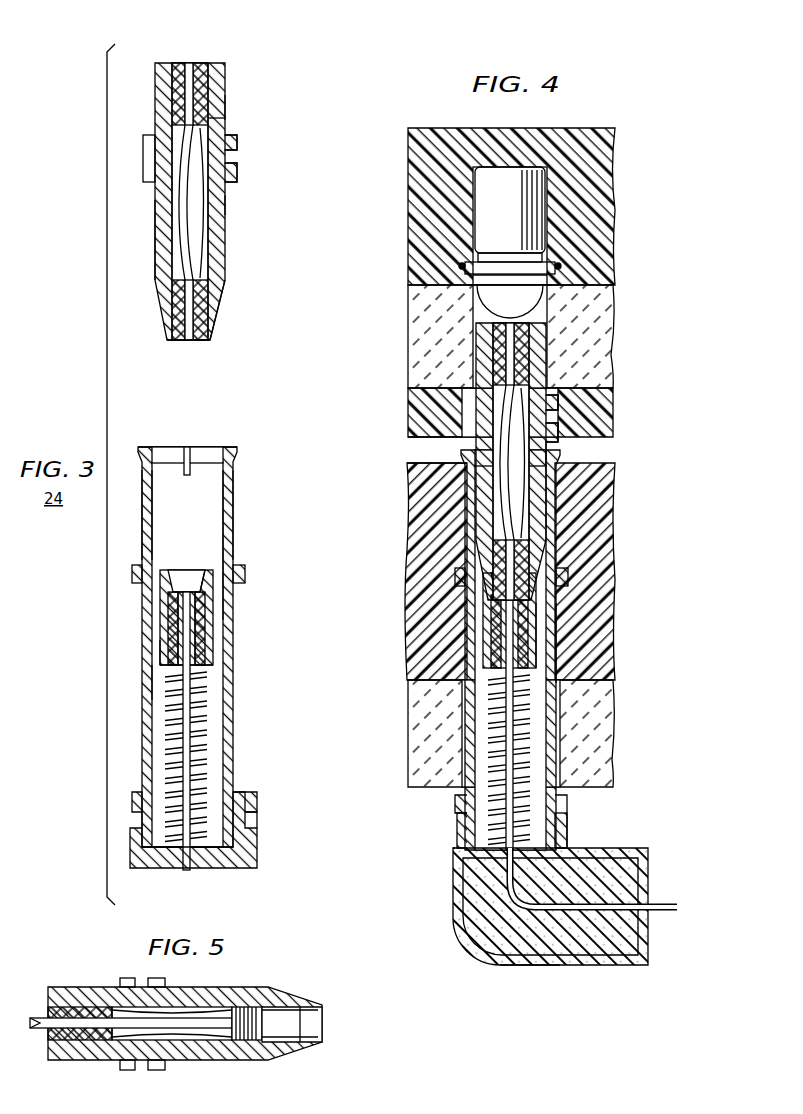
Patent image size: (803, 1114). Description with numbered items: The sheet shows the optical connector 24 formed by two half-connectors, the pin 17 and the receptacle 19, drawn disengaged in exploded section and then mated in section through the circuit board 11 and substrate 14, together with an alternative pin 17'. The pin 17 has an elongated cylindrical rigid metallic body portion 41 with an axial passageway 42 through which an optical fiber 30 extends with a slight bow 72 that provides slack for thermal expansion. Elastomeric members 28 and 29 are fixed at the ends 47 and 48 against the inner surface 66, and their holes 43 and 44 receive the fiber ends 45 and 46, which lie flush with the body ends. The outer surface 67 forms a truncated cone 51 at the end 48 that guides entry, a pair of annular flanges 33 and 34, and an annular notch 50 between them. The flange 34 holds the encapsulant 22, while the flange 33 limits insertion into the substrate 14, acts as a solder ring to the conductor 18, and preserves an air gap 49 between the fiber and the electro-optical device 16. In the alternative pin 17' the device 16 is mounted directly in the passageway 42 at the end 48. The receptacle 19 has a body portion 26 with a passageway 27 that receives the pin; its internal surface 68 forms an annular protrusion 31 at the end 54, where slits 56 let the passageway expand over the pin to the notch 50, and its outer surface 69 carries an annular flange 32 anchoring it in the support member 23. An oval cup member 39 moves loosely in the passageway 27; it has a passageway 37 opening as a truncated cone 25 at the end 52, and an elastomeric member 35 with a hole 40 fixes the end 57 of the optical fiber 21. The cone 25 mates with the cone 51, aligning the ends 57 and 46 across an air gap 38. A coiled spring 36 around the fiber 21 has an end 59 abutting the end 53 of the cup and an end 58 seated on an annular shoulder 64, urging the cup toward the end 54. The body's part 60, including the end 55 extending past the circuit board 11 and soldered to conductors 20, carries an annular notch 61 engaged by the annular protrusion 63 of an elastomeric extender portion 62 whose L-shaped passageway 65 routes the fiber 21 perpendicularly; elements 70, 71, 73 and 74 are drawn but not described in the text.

In FIG. 4, the circuit board 11 is at (606, 740).
In FIG. 4, the substrate 14 is at (612, 336).
In FIG. 4, the electro-optical device 16 is at (472, 178).
In FIG. 5, the electro-optical device 16 is at (306, 1012).
In FIG. 3, the pin 17 is at (179, 189).
In FIG. 4, the pin 17 is at (464, 461).
In FIG. 5, the pin (alternative embodiment) 17' is at (176, 1004).
In FIG. 4, the conductor 18 is at (572, 378).
In FIG. 3, the receptacle 19 is at (140, 470).
In FIG. 4, the receptacle 19 is at (465, 650).
In FIG. 4, the electrical conductors 20 is at (572, 797).
In FIG. 3, the optical fiber 21 is at (190, 704).
In FIG. 4, the optical fiber 21 is at (472, 722).
In FIG. 4, the encapsulant 22 is at (612, 210).
In FIG. 4, the support member 23 is at (612, 500).
In FIG. 4, the connector 24 is at (455, 448).
In FIG. 3, the truncated cone 25 is at (214, 570).
In FIG. 3, the body portion 26 is at (228, 524).
In FIG. 4, the body portion 26 is at (603, 643).
In FIG. 3, the passageway 27 is at (210, 497).
In FIG. 3, the elastomeric member 28 is at (205, 84).
In FIG. 4, the elastomeric member 28 is at (484, 461).
In FIG. 3, the elastomeric member 29 is at (208, 322).
In FIG. 4, the elastomeric member 29 is at (479, 570).
In FIG. 3, the optical fiber 30 is at (192, 264).
In FIG. 4, the optical fiber 30 is at (543, 462).
In FIG. 3, the annular protrusion 31 is at (226, 448).
In FIG. 3, the annular flange 32 is at (242, 575).
In FIG. 4, the annular flange 32 is at (552, 572).
In FIG. 3, the annular flange 33 is at (235, 144).
In FIG. 4, the annular flange 33 is at (598, 394).
In FIG. 3, the annular flange 34 is at (235, 170).
In FIG. 4, the annular flange 34 is at (598, 436).
In FIG. 3, the elastomeric member 35 is at (208, 612).
In FIG. 4, the elastomeric member 35 is at (481, 620).
In FIG. 3, the coiled spring 36 is at (198, 745).
In FIG. 4, the coiled spring 36 is at (540, 760).
In FIG. 3, the passageway 37 is at (172, 580).
In FIG. 4, the air gap 38 is at (546, 602).
In FIG. 3, the cup member 39 is at (210, 645).
In FIG. 4, the cup member 39 is at (593, 635).
In FIG. 3, the hole 40 is at (183, 640).
In FIG. 3, the body portion 41 is at (224, 106).
In FIG. 4, the body portion 41 is at (581, 453).
In FIG. 3, the passageway 42 is at (218, 117).
In FIG. 3, the hole 43 is at (178, 102).
In FIG. 3, the hole 44 is at (183, 306).
In FIG. 3, the end 45 is at (190, 63).
In FIG. 3, the end 46 is at (188, 342).
In FIG. 3, the end 47 is at (212, 66).
In FIG. 3, the end 48 is at (204, 342).
In FIG. 4, the air gap 49 is at (540, 324).
In FIG. 3, the annular notch 50 is at (222, 206).
In FIG. 3, the truncated cone 51 is at (220, 300).
In FIG. 3, the end 52 is at (201, 572).
In FIG. 3, the end 53 is at (213, 676).
In FIG. 3, the end 54 is at (164, 448).
In FIG. 3, the end 55 is at (222, 870).
In FIG. 3, the slits 56 is at (190, 450).
In FIG. 3, the end 57 is at (187, 580).
In FIG. 3, the end 58 is at (176, 870).
In FIG. 3, the end 59 is at (165, 688).
In FIG. 4, the part 60 is at (562, 826).
In FIG. 3, the annular notch 61 is at (244, 802).
In FIG. 4, the annular notch 61 is at (458, 816).
In FIG. 4, the extender portion 62 is at (452, 848).
In FIG. 3, the annular protrusion 63 is at (235, 790).
In FIG. 4, the annular protrusion 63 is at (462, 836).
In FIG. 3, the annular shoulder 64 is at (132, 826).
In FIG. 4, the annular shoulder 64 is at (466, 882).
In FIG. 4, the passageway 65 is at (508, 956).
In FIG. 3, the inner surface 66 is at (168, 152).
In FIG. 3, the outer surface 67 is at (155, 244).
In FIG. 3, the internal surface 68 is at (158, 518).
In FIG. 3, the outer surface 69 is at (152, 536).
In FIG. 3, the piston sleeve 70 is at (172, 612).
In FIG. 3, the piston sleeve 71 is at (165, 650).
In FIG. 3, the bow 72 is at (192, 214).
In FIG. 4, the tube 73 is at (640, 882).
In FIG. 5, the channel 74 is at (180, 1030).